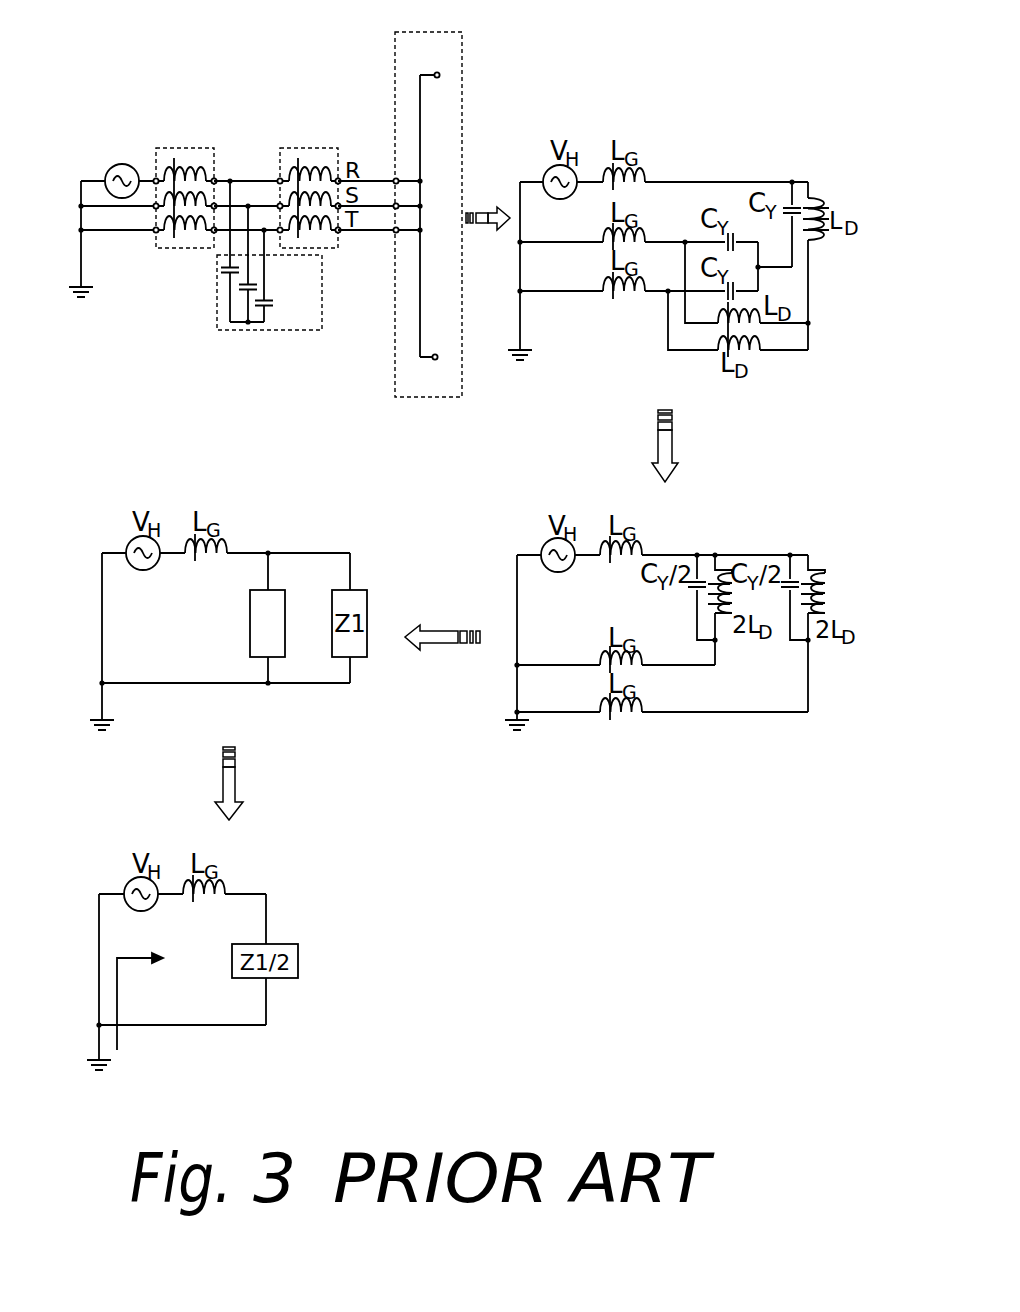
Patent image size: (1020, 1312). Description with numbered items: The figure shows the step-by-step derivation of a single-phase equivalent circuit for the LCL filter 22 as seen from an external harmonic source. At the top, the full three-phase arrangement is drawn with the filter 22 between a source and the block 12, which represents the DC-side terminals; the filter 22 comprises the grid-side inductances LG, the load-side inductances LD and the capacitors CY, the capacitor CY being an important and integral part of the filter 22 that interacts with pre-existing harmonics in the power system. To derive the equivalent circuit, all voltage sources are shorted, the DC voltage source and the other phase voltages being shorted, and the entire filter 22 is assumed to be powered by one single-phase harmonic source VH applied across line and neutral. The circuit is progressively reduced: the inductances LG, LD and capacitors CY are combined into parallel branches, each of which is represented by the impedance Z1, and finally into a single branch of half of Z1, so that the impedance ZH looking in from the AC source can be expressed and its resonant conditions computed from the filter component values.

The LCL filter 22 is at (268, 112).
The power converter 12 is at (462, 117).
The single-phase harmonic source VH is at (123, 165).
The grid-side inductance LG is at (184, 180).
The load-side inductance LD is at (308, 180).
The capacitor CY is at (269, 255).
The impedance Z1 is at (267, 618).
The impedance ZH is at (157, 999).